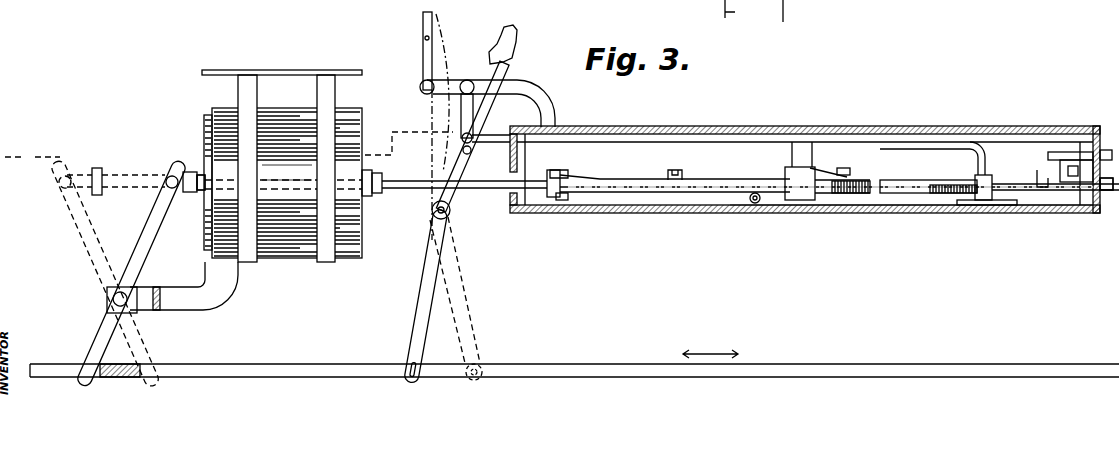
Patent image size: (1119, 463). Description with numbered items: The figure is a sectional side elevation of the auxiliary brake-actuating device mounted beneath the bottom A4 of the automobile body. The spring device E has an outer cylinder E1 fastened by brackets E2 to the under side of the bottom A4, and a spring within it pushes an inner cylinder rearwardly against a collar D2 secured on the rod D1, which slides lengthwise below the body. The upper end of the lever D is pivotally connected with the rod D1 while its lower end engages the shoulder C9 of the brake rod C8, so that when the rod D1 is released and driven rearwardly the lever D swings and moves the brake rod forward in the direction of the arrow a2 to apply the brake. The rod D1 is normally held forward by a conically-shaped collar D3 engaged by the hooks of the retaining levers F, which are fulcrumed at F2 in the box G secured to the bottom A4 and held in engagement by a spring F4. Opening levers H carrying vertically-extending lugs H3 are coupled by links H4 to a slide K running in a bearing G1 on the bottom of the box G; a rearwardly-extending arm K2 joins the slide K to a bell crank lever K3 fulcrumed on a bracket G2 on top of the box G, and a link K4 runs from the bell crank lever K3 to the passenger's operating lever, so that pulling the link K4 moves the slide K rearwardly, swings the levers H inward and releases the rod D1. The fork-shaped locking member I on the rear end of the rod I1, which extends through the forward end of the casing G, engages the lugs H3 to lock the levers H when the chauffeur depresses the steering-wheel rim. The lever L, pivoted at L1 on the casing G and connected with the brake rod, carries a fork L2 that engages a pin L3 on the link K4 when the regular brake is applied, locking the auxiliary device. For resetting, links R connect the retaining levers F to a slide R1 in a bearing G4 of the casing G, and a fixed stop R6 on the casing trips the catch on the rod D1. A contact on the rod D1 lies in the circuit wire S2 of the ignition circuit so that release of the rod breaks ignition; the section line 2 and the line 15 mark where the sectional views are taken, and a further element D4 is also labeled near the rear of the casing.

The bottom of the automobile body A4 is at (314, 70).
The spring device E is at (269, 181).
The outer cylinder E1 is at (292, 248).
The brackets E2 is at (330, 95).
The lever D is at (142, 232).
The rod D1 is at (192, 195).
The collar D2 is at (199, 172).
The conically-shaped collar D3 is at (559, 165).
The block D4 is at (1075, 184).
The rail C8 is at (616, 364).
The shoulder C9 is at (105, 278).
The direction arrow a2 is at (710, 348).
The lever L is at (420, 277).
The pivot L1 is at (450, 215).
The fork L2 is at (507, 40).
The pin L3 is at (424, 38).
The slide K is at (930, 196).
The rearwardly-extending arm K2 is at (856, 128).
The bell crank lever K3 is at (475, 106).
The link K4 is at (431, 16).
The box G is at (742, 213).
The bearing G1 is at (998, 206).
The bracket G2 is at (540, 97).
The bearing G4 is at (805, 186).
The retaining levers F is at (640, 194).
The fulcrum F2 is at (565, 173).
The spring F4 is at (758, 202).
The links R is at (830, 176).
The slide R1 is at (844, 170).
The fixed stop R6 is at (758, 193).
The opening levers H is at (938, 190).
The lugs H3 is at (1037, 176).
The links H4 is at (978, 188).
The fork-shaped locking member I is at (1070, 183).
The rod I1 is at (1104, 192).
The section line 2 is at (1101, 128).
The circuit wire S2 is at (738, 10).
The section line 15 is at (782, 21).